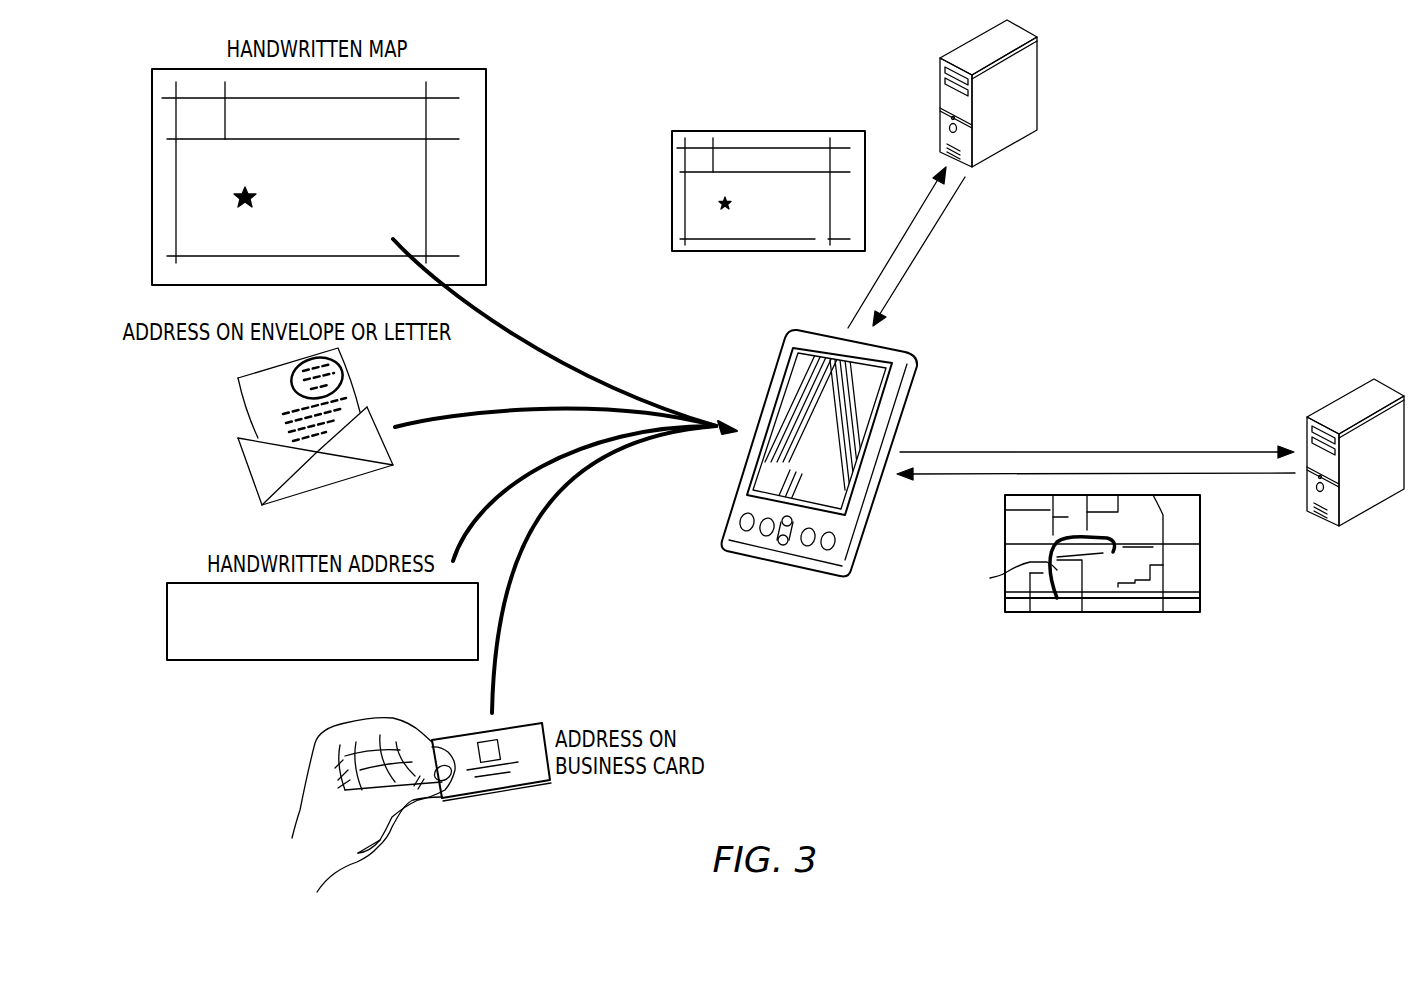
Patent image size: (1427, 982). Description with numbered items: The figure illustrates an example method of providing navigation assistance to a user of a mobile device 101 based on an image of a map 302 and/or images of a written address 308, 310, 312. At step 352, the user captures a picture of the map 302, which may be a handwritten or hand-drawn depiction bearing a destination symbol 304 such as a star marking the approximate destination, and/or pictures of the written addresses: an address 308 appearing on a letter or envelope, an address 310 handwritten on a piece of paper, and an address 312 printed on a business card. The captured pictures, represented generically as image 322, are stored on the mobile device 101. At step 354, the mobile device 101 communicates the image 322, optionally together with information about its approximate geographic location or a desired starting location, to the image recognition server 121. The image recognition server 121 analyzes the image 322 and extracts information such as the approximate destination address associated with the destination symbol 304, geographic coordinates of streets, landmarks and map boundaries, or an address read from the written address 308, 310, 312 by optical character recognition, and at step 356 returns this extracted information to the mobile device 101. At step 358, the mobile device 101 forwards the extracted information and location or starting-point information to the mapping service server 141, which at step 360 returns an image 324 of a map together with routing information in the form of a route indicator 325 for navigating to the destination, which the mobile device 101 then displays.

The mobile device 101 is at (766, 386).
The image recognition server 121 is at (940, 77).
The mapping service server 141 is at (1370, 505).
The map 302 is at (146, 174).
The destination symbol 304 is at (251, 190).
The written address 308 is at (343, 369).
The written address 310 is at (166, 624).
The written address 312 is at (493, 783).
The image 322 is at (768, 130).
The image of a map 324 is at (1200, 563).
The route indicator 325 is at (1010, 578).
The step of capturing images 352 is at (692, 430).
The step of communicating images to image recognition server 354 is at (870, 287).
The step of communicating extracted information 356 is at (945, 210).
The step of communicating to mapping service server 358 is at (1090, 450).
The step of communicating map image and routing information 360 is at (943, 478).